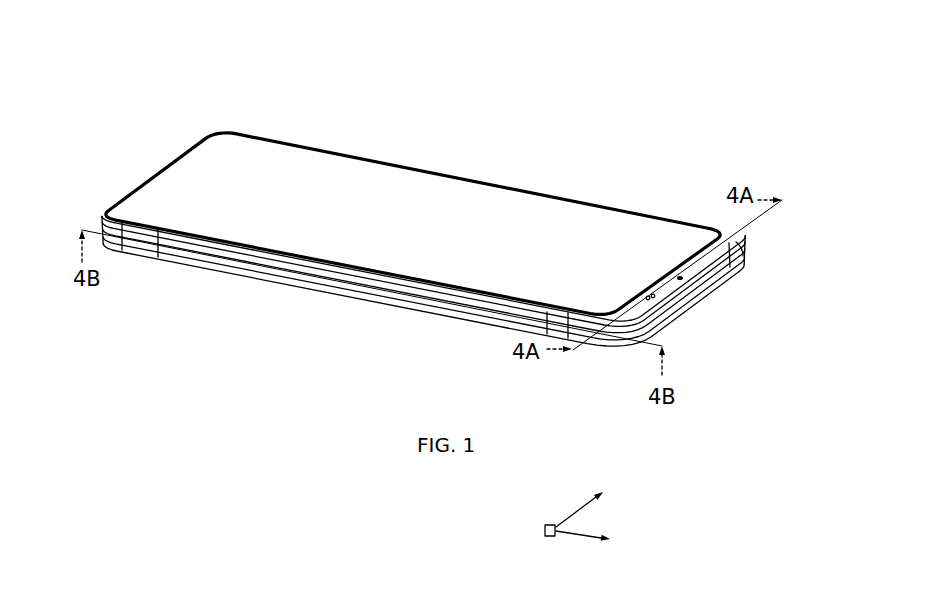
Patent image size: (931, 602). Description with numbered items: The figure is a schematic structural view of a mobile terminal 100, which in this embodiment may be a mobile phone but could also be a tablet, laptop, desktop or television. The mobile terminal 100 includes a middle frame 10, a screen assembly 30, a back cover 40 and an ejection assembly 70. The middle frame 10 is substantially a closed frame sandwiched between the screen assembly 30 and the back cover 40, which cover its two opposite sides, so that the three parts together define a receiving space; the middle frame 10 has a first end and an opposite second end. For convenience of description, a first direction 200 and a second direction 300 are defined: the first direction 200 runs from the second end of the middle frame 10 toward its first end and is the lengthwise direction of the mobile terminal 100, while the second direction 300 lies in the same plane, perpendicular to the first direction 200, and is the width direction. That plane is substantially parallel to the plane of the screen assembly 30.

The mobile terminal 100 is at (293, 44).
The screen assembly 30 is at (346, 170).
The middle frame 10 is at (317, 272).
The back cover 40 is at (330, 291).
The ejection assembly 70 is at (748, 253).
The first direction 200 is at (606, 543).
The second direction 300 is at (598, 499).